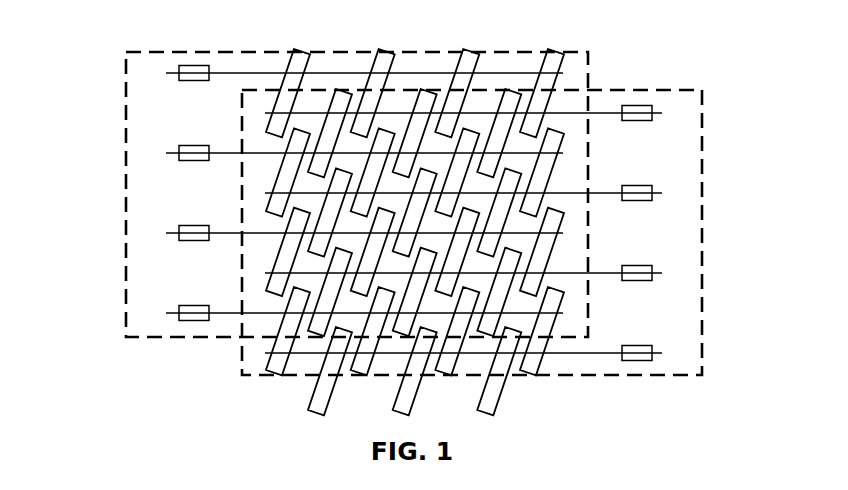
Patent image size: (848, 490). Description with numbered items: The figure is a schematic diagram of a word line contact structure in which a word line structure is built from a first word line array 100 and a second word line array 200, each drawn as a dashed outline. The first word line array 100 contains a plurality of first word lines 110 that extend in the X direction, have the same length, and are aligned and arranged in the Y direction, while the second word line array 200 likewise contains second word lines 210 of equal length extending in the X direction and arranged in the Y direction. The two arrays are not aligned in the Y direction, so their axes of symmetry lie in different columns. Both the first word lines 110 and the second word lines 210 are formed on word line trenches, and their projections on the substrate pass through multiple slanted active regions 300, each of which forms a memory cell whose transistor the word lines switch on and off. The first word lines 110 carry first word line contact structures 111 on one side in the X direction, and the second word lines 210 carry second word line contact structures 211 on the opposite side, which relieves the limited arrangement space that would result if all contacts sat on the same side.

The first word line array 100 is at (138, 285).
The first word line 110 is at (222, 155).
The first word line contact structure 111 is at (185, 230).
The second word line array 200 is at (685, 325).
The second word line 210 is at (603, 192).
The second word line contact structure 211 is at (637, 273).
The active region 300 is at (556, 57).